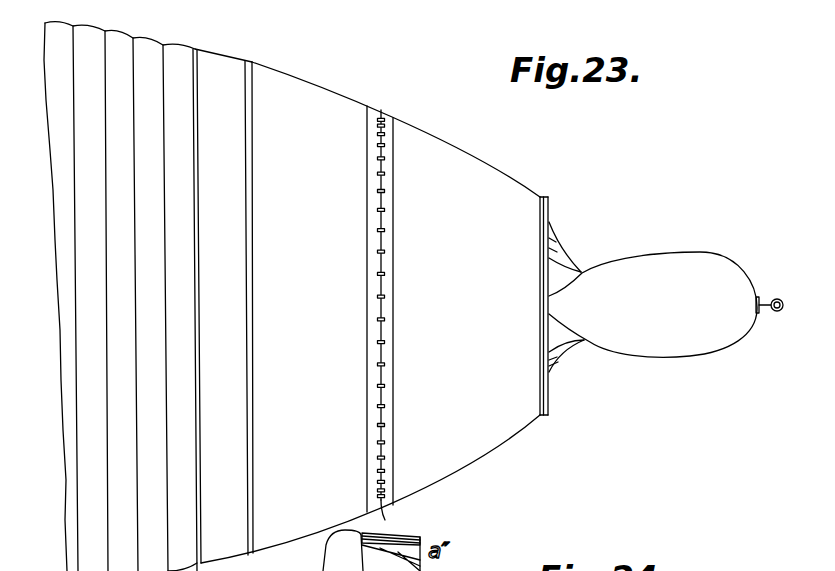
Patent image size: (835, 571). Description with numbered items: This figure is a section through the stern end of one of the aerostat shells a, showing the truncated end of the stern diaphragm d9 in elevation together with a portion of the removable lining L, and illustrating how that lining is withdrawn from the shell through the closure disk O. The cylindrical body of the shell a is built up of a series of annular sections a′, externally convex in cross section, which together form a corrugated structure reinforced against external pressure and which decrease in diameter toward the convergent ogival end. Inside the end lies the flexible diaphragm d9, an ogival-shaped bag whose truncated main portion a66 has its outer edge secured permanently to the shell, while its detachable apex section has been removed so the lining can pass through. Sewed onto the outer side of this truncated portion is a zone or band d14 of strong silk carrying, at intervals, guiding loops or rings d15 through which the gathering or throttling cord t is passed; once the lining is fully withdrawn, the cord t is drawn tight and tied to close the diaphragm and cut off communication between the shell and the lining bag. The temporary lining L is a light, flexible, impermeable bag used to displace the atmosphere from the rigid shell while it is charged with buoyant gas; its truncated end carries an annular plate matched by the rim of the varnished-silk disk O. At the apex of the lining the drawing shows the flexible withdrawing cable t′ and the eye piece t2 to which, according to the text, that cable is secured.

The external shell a is at (119, 287).
The annular sections a′ is at (155, 308).
The internal diaphragm d9 is at (374, 312).
The zone or band d14 is at (396, 120).
The guiding loops or rings d15 is at (380, 237).
The truncated main portion a66 is at (417, 309).
The temporary lining L is at (653, 289).
The closure disk O is at (566, 357).
The gathering or throttling cord t is at (389, 512).
The eye ring t′ is at (780, 298).
The pin plate t2 is at (768, 317).